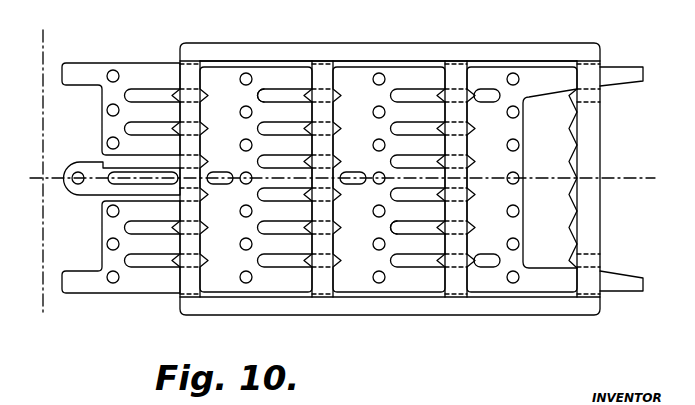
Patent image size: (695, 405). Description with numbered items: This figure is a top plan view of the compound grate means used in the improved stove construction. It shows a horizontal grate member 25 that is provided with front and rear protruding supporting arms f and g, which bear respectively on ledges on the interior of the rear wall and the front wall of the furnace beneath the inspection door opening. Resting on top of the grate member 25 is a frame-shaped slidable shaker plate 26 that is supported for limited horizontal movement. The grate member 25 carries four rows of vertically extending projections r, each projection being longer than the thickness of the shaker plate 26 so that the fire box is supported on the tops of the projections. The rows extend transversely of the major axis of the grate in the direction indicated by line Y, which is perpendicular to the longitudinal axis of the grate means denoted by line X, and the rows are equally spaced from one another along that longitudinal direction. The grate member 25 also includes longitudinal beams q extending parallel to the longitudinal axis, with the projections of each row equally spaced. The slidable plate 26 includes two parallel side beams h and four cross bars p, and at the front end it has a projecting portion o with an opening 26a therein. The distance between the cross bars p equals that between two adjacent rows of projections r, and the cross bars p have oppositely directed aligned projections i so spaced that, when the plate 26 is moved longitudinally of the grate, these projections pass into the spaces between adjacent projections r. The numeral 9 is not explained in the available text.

The perforated comb panel 9 is at (280, 112).
The horizontal grate member 25 is at (121, 179).
The frame-shaped slidable shaker plate 26 is at (381, 43).
The opening 26a is at (78, 186).
The front protruding supporting arm f is at (78, 63).
The rear protruding supporting arm g is at (640, 67).
The side beam h is at (504, 43).
The oppositely directed aligned projection i is at (305, 128).
The projecting portion o is at (78, 162).
The cross bar p is at (188, 285).
The longitudinal beam q is at (282, 273).
The vertically extending projection r is at (113, 283).
The longitudinal axis line X is at (335, 181).
The transverse direction line Y is at (42, 173).